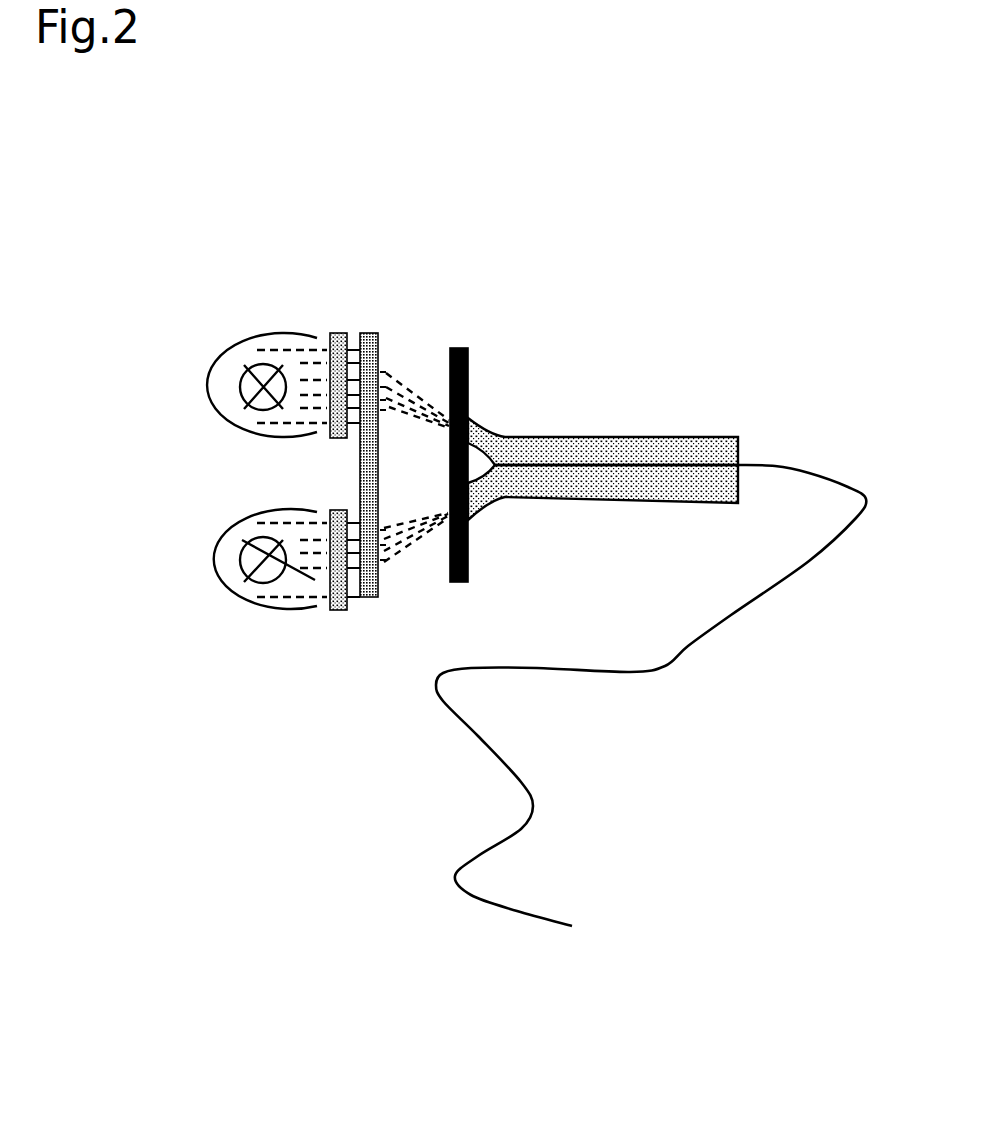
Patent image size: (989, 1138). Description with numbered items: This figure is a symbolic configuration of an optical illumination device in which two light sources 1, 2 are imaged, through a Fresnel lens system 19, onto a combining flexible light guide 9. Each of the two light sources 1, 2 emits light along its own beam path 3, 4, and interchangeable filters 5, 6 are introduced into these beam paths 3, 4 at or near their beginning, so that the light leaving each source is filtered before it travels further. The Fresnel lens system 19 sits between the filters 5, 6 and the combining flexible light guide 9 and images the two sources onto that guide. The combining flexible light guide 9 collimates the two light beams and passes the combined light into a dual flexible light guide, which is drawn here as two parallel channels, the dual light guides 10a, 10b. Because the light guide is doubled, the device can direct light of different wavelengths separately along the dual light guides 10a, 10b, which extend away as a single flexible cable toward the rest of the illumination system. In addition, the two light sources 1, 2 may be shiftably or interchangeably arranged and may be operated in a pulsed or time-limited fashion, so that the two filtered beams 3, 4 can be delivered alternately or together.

The light source 1 is at (253, 363).
The light source 2 is at (252, 580).
The beam path 3 is at (300, 362).
The beam path 4 is at (300, 596).
The interchangeable filter 5 is at (340, 338).
The interchangeable filter 6 is at (330, 609).
The Fresnel lens system 19 is at (379, 352).
The combining flexible light guide 9 is at (468, 390).
The dual light guide 10a is at (573, 450).
The dual light guide 10b is at (603, 492).